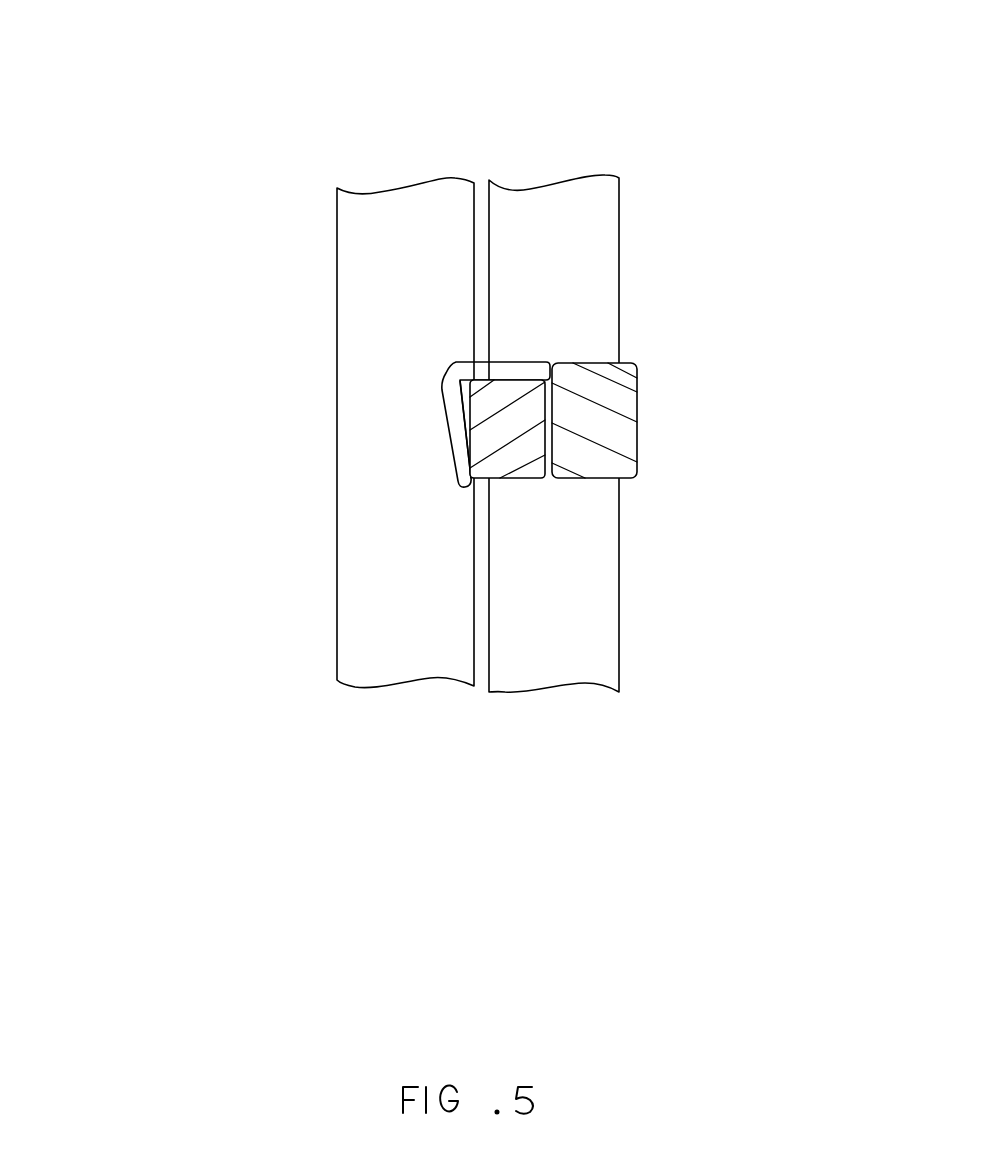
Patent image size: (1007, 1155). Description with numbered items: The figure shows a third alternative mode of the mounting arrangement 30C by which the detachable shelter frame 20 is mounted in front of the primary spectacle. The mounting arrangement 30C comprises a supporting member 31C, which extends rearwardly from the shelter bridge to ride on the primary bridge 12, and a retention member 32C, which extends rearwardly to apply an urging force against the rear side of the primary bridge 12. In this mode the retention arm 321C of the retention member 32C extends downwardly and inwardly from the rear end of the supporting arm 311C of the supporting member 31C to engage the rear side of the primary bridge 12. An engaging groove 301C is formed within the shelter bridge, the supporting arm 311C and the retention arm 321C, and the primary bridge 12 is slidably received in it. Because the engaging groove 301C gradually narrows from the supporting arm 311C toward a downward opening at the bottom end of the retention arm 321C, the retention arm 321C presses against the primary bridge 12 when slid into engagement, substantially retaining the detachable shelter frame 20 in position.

The detachable shelter frame 20 is at (817, 160).
The mounting arrangement 30C is at (160, 212).
The engaging groove 301C is at (455, 381).
The supporting arm 311C is at (522, 372).
The supporting member 31C is at (767, 310).
The retention arm 321C is at (458, 424).
The retention member 32C is at (145, 542).
The primary bridge 12 is at (512, 463).